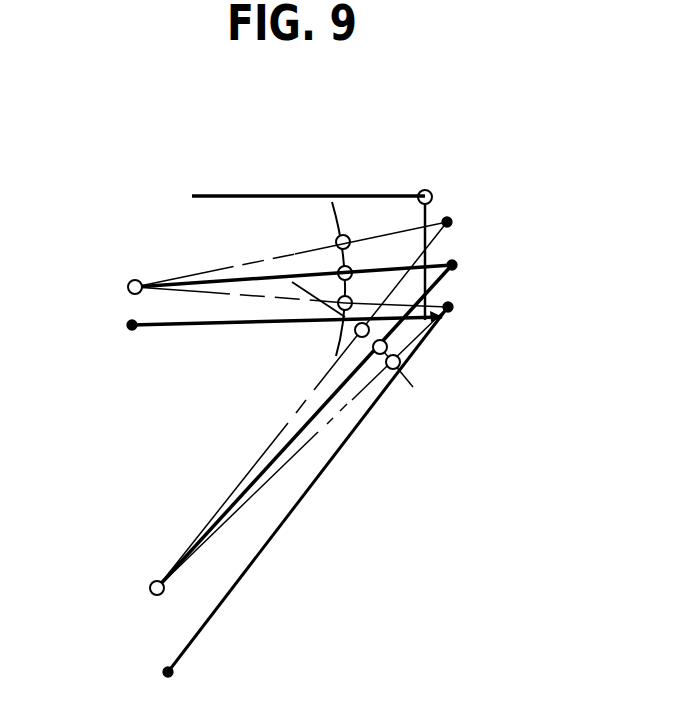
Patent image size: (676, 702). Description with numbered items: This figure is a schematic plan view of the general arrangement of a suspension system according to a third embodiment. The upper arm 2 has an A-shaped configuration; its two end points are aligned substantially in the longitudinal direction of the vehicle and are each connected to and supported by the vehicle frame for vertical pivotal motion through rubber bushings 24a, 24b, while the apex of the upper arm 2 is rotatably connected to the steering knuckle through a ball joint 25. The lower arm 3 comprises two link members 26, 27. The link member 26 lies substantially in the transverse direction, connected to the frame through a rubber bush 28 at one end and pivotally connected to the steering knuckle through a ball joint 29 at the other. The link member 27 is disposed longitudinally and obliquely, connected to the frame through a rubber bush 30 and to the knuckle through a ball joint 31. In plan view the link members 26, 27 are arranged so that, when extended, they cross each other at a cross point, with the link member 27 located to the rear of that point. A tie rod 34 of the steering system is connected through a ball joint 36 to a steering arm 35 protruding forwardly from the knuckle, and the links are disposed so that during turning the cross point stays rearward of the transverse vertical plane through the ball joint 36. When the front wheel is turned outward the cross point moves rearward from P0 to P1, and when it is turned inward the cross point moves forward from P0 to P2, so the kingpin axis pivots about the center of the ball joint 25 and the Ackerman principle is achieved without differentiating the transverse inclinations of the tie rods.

The upper arm 2 is at (285, 520).
The lower arm 3 is at (388, 260).
The rubber bushing 24a is at (132, 332).
The rubber bushing 24b is at (165, 669).
The ball joint 25 is at (444, 316).
The link member 26 is at (237, 279).
The link member 27 is at (300, 433).
The rubber bush 28 is at (127, 276).
The ball joint 29 is at (338, 263).
The rubber bush 30 is at (148, 585).
The ball joint 31 is at (378, 356).
The tie rod 34 is at (270, 194).
The steering arm 35 is at (432, 260).
The ball joint 36 is at (431, 190).
The cross point at neutral position P0 is at (456, 267).
The cross point at outward turn P1 is at (452, 303).
The cross point at inward turn P2 is at (452, 218).